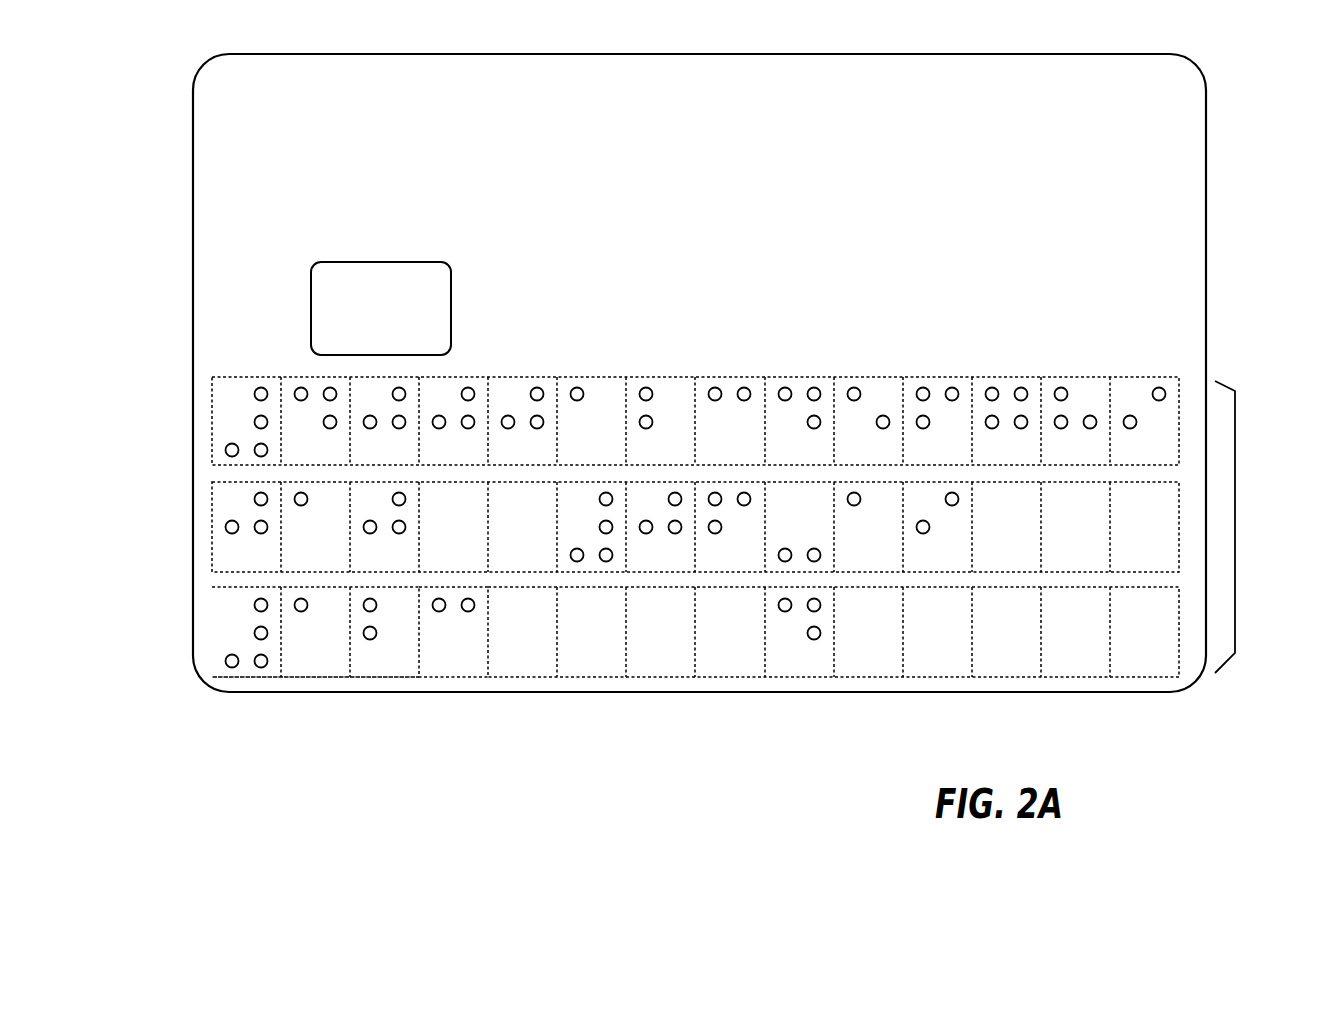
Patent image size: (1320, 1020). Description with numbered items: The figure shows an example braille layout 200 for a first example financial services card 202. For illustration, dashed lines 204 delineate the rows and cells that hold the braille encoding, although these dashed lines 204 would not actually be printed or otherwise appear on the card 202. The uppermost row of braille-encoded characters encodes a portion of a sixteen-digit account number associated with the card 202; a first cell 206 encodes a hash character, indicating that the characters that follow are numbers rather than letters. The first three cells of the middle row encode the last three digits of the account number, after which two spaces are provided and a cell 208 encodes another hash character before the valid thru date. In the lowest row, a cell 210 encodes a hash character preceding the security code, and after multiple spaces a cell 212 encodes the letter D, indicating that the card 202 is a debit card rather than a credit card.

The braille layout 200 is at (1235, 527).
The financial services card 202 is at (193, 108).
The dashed lines 204 is at (420, 677).
The first cell 206 is at (226, 411).
The cell 208 is at (598, 562).
The cell 210 is at (643, 677).
The cell 212 is at (792, 658).